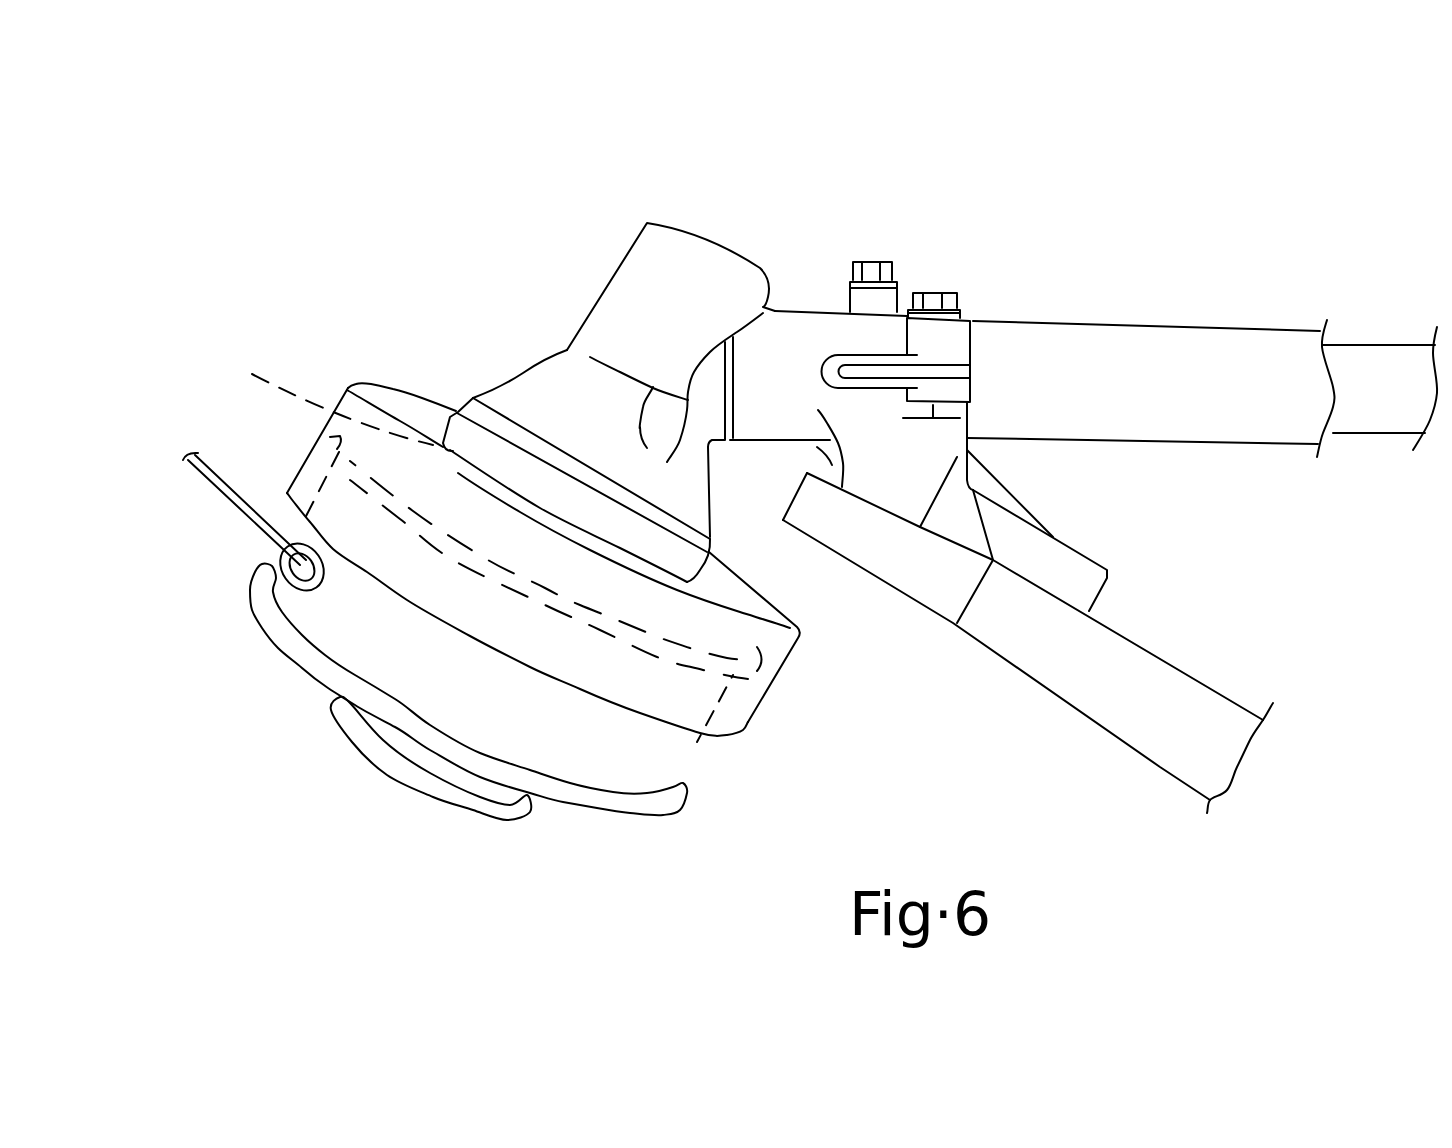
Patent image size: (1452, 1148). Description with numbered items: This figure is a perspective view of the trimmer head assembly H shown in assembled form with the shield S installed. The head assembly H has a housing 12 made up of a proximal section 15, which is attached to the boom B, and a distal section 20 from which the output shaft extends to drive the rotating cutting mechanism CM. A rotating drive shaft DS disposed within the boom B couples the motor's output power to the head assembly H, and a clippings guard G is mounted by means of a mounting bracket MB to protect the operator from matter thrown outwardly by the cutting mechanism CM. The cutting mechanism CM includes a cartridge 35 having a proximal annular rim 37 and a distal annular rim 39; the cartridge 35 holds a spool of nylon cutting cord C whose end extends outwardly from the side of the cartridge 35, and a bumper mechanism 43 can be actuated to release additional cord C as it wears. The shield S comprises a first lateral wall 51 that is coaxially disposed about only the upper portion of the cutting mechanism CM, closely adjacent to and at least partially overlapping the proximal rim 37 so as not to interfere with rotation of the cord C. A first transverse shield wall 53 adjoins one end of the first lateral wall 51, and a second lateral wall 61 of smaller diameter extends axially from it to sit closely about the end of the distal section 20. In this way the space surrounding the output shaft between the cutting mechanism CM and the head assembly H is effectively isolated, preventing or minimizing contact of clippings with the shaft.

The housing 12 is at (622, 262).
The proximal section 15 is at (796, 310).
The distal section 20 is at (533, 363).
The cartridge 35 is at (683, 763).
The proximal annular rim 37 is at (485, 549).
The distal annular rim 39 is at (257, 607).
The bumper mechanism 43 is at (387, 773).
The first lateral wall 51 is at (342, 388).
The first transverse shield wall 53 is at (404, 398).
The second lateral wall 61 is at (455, 413).
The trimmer head assembly H is at (545, 203).
The shield S is at (328, 321).
The cutting cord C is at (217, 502).
The cutting mechanism CM is at (593, 827).
The boom B is at (1160, 327).
The drive shaft DS is at (1370, 345).
The mounting bracket MB is at (1080, 547).
The clippings guard G is at (1203, 680).